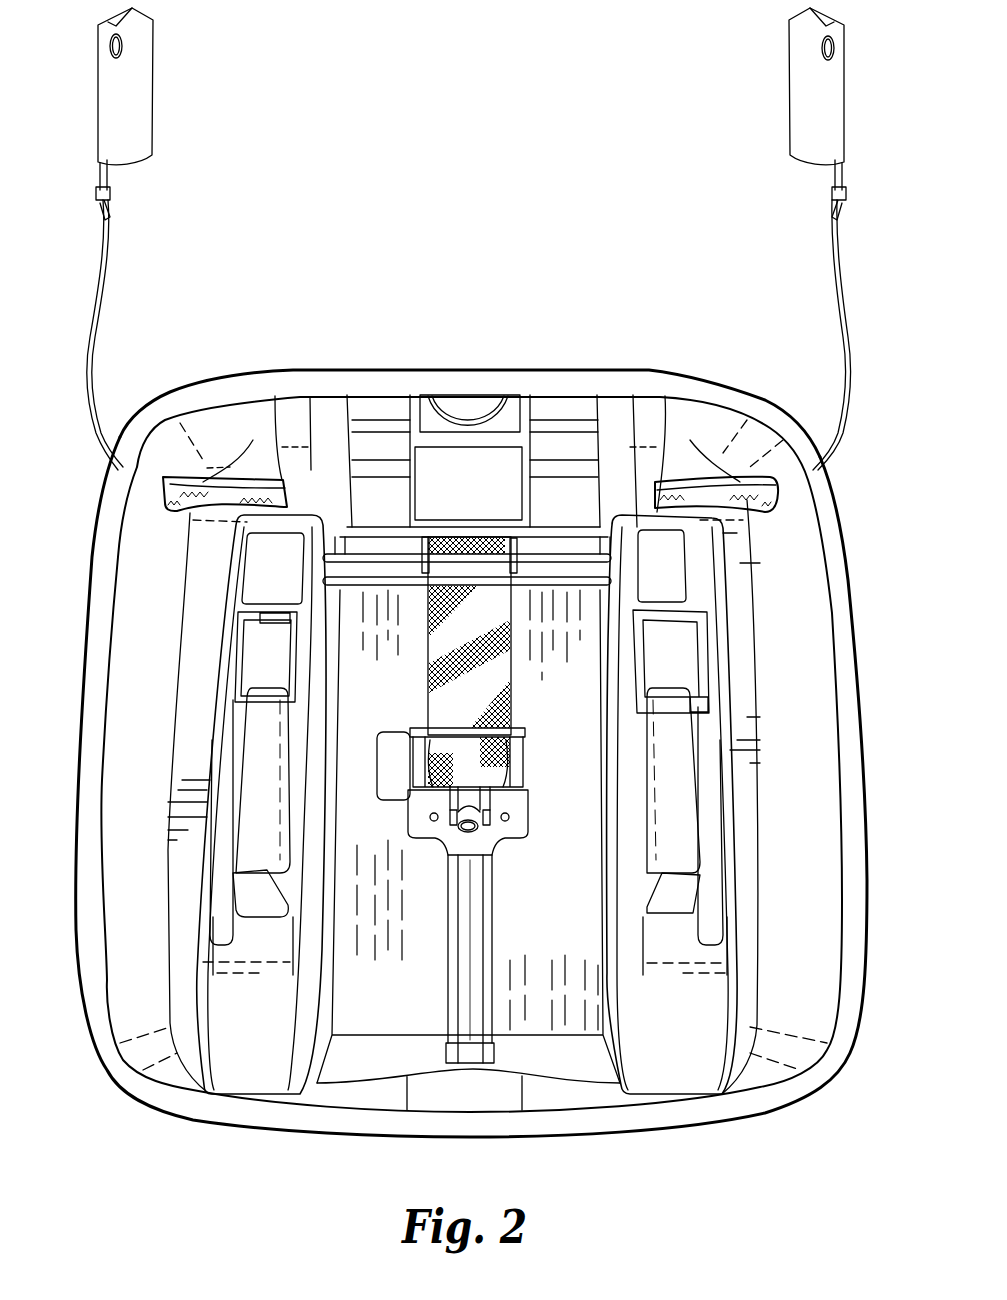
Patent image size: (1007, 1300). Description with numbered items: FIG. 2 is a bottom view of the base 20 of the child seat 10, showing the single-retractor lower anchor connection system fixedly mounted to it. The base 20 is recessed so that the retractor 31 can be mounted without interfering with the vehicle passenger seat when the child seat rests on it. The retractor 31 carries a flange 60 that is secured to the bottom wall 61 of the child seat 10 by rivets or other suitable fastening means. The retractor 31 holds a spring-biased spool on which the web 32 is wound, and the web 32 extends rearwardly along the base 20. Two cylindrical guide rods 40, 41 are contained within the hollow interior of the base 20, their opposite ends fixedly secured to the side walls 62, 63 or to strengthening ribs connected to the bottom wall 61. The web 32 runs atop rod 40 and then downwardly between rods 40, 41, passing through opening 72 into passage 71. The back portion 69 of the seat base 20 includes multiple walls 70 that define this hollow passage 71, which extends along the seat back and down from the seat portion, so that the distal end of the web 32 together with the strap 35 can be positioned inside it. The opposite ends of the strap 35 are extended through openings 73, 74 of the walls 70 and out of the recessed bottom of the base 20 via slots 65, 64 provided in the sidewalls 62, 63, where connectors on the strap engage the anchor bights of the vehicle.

The child seat 10 is at (833, 493).
The base 20 is at (862, 648).
The retractor 31 is at (517, 760).
The web 32 is at (478, 680).
The strap 35 is at (82, 347).
The guide rod 40 is at (350, 587).
The guide rod 41 is at (338, 545).
The flange 60 is at (512, 828).
The bottom wall 61 is at (537, 880).
The side wall 62 is at (137, 625).
The side wall 63 is at (790, 620).
The slot 64 is at (757, 507).
The slot 65 is at (165, 492).
The back portion 69 is at (207, 390).
The walls 70 is at (620, 473).
The passage 71 is at (422, 547).
The opening 72 is at (518, 553).
The opening 73 is at (739, 482).
The opening 74 is at (202, 482).